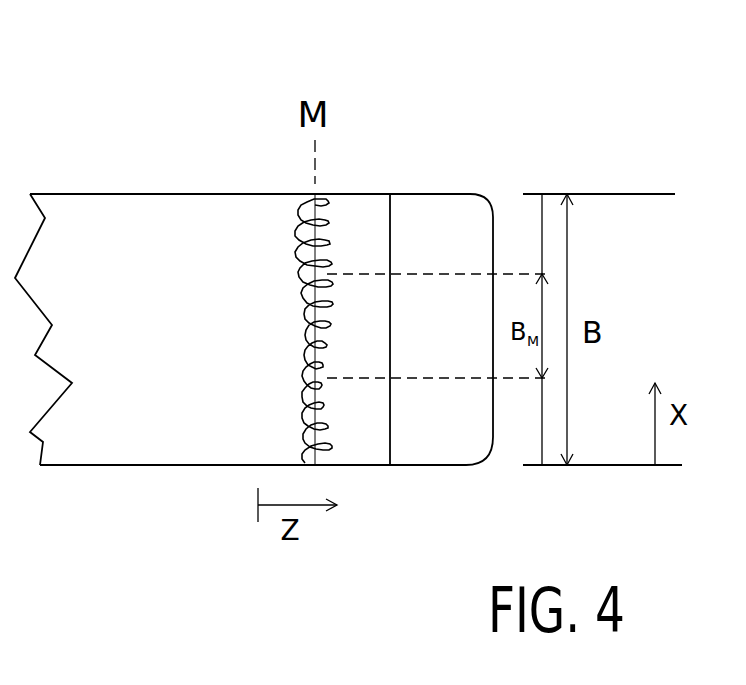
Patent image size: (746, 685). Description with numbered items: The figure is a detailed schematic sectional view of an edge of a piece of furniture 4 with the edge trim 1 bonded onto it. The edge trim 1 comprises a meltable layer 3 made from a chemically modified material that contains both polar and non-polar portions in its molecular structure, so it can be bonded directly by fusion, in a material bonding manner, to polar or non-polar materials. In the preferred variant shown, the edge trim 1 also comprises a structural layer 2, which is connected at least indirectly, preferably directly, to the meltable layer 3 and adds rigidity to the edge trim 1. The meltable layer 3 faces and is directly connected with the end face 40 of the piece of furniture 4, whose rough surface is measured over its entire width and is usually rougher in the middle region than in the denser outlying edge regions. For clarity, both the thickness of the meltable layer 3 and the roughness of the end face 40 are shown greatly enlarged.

The edge trim 1 is at (404, 234).
The structural layer 2 is at (427, 225).
The meltable layer 3 is at (345, 428).
The piece of furniture 4 is at (135, 412).
The end face 40 is at (259, 154).